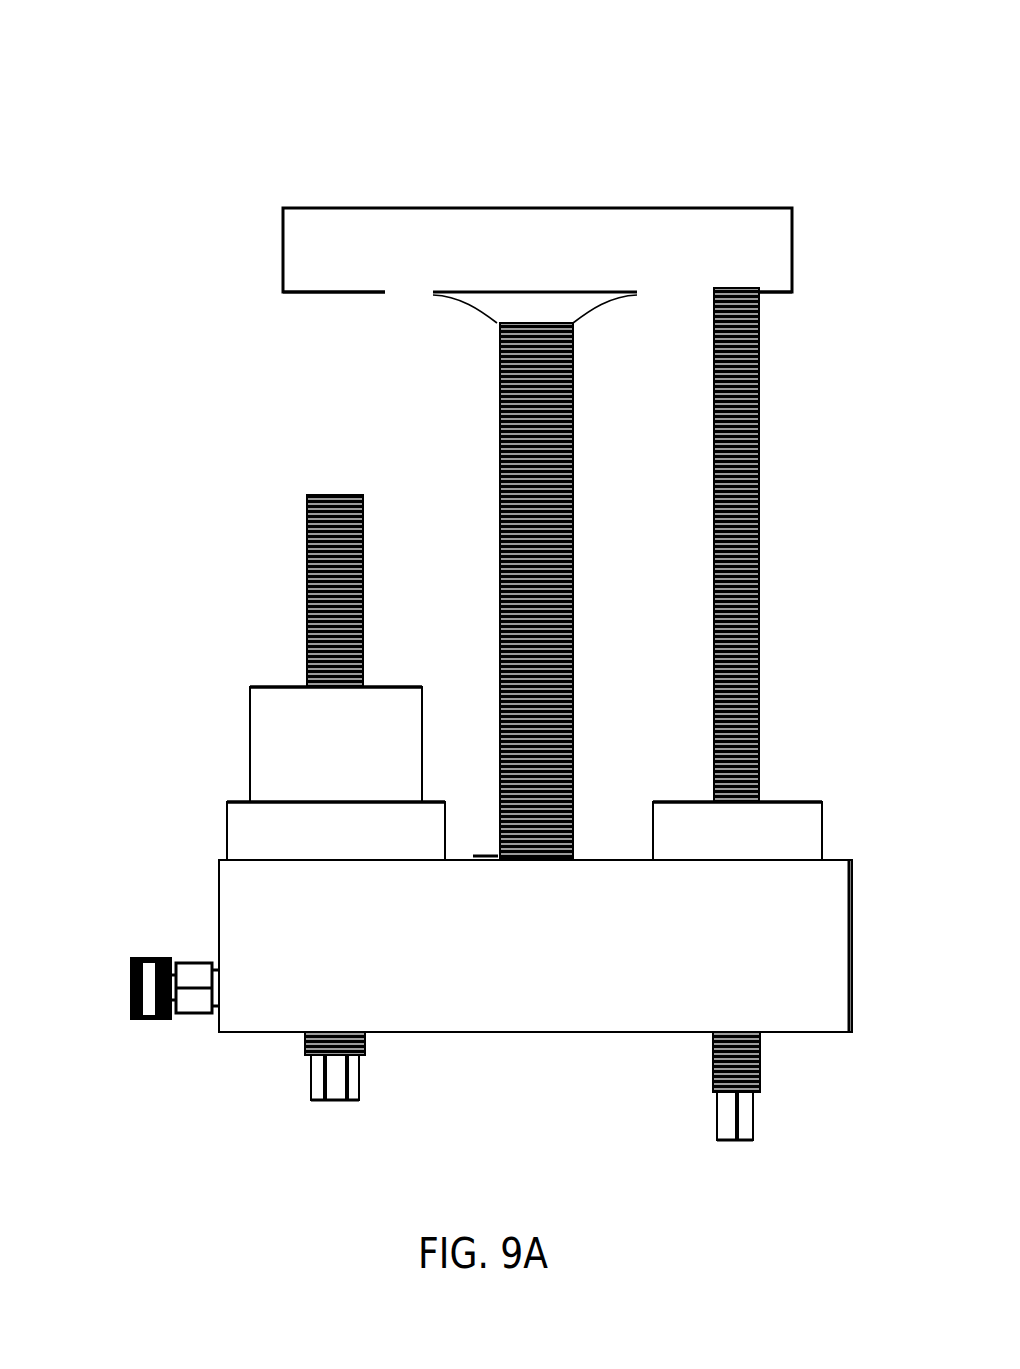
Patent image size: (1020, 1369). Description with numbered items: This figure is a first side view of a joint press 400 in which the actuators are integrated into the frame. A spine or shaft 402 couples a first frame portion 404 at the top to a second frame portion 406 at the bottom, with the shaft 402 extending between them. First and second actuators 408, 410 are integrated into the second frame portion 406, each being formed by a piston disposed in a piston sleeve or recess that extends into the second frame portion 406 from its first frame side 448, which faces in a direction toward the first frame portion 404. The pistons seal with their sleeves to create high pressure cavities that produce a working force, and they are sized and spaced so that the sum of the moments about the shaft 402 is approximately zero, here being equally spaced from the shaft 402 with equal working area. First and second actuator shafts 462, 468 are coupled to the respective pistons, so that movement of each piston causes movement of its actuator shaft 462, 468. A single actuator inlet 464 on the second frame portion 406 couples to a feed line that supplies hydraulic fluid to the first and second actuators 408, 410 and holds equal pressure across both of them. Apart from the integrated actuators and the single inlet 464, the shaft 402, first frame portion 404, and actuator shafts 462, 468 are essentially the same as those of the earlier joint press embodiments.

The joint press 400 is at (262, 95).
The shaft 402 is at (498, 403).
The first frame portion 404 is at (365, 208).
The second frame portion 406 is at (220, 893).
The first actuator 408 is at (226, 822).
The second actuator 410 is at (822, 822).
The first frame side 448 is at (472, 857).
The first actuator shaft 462 is at (307, 586).
The actuator inlet 464 is at (130, 983).
The second actuator shaft 468 is at (760, 508).